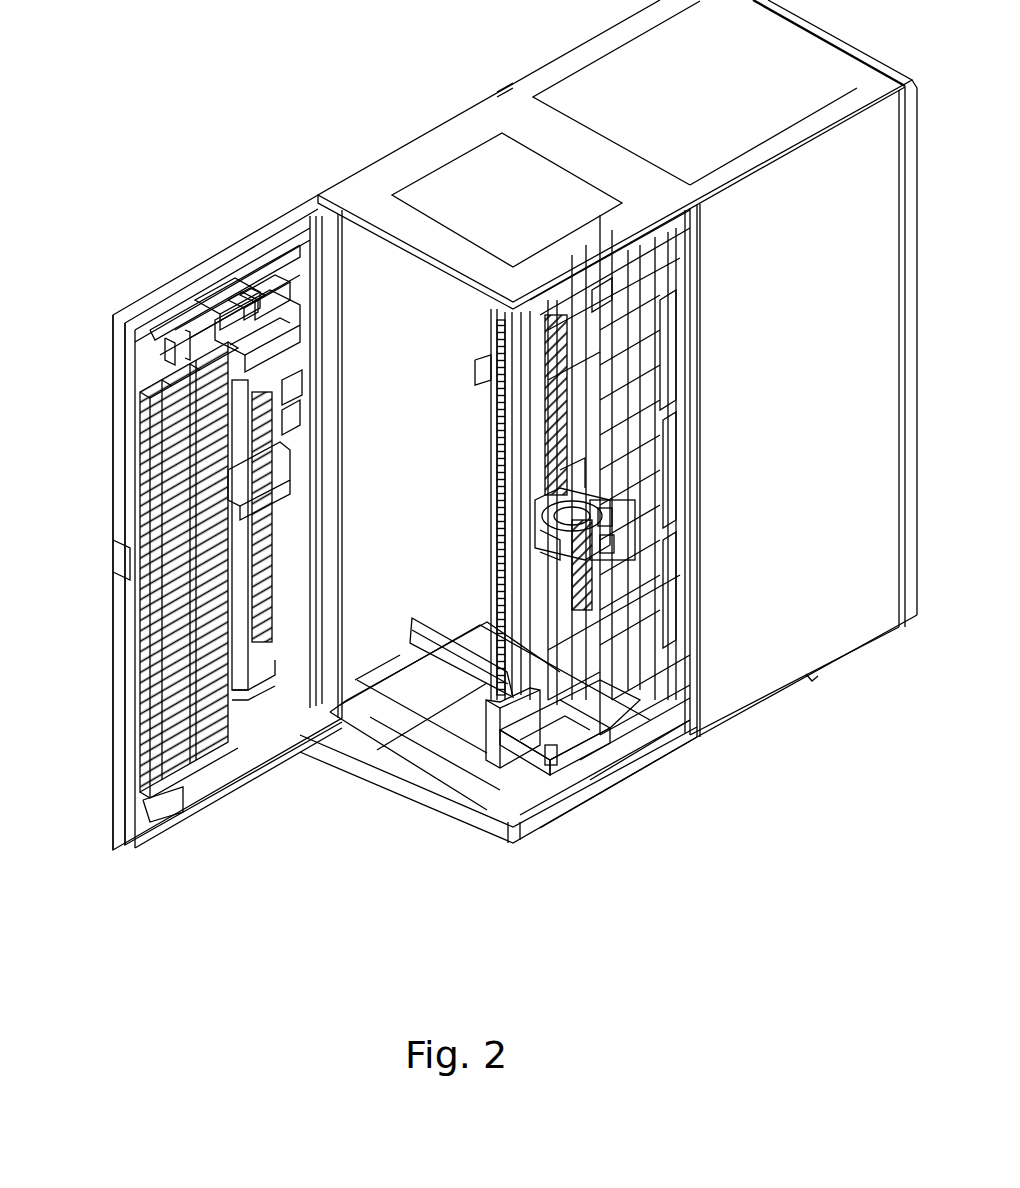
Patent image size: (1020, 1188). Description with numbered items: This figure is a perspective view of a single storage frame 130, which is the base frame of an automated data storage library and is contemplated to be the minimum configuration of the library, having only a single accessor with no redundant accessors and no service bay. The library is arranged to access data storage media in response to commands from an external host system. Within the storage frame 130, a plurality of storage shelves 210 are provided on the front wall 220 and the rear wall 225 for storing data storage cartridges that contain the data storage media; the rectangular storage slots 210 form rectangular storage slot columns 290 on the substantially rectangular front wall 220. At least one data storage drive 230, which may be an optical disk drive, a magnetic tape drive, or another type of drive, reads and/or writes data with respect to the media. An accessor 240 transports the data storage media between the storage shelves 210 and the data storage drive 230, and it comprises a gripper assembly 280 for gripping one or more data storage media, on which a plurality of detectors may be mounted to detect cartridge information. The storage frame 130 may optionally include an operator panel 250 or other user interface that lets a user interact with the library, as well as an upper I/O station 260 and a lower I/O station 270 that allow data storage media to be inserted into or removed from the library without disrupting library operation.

The storage frame 130 is at (379, 902).
The storage shelves 210 is at (130, 659).
The front wall 220 is at (120, 503).
The rear wall 225 is at (492, 343).
The data storage drive 230 is at (652, 298).
The accessor 240 is at (563, 752).
The operator panel 250 is at (298, 318).
The upper I/O station 260 is at (282, 357).
The lower I/O station 270 is at (280, 556).
The gripper assembly 280 is at (642, 527).
The storage slot columns 290 is at (180, 782).